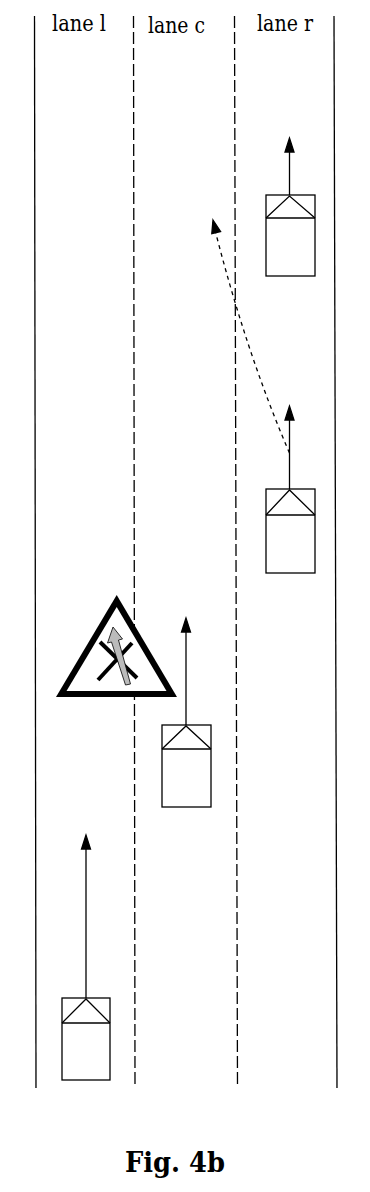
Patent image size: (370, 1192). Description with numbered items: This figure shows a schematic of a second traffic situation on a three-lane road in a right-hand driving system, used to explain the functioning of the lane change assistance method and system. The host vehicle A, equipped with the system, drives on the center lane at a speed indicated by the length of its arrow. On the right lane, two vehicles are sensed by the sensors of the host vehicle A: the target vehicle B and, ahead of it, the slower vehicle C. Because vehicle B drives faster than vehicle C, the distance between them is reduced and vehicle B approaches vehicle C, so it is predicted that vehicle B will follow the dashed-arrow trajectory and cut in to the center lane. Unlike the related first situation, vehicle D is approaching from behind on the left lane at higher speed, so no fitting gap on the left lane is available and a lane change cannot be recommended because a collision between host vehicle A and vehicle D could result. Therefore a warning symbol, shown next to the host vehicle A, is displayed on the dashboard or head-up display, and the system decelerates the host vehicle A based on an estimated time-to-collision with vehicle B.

The host vehicle A is at (186, 712).
The target vehicle B is at (263, 396).
The vehicle ahead on right lane C is at (290, 207).
The approaching vehicle on left lane D is at (86, 957).